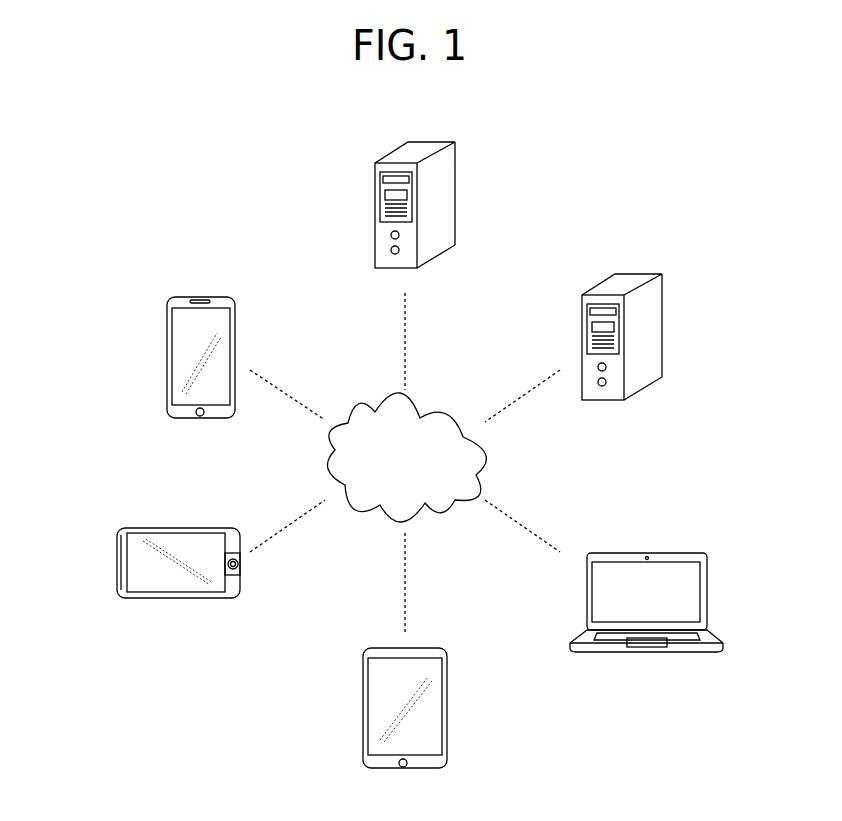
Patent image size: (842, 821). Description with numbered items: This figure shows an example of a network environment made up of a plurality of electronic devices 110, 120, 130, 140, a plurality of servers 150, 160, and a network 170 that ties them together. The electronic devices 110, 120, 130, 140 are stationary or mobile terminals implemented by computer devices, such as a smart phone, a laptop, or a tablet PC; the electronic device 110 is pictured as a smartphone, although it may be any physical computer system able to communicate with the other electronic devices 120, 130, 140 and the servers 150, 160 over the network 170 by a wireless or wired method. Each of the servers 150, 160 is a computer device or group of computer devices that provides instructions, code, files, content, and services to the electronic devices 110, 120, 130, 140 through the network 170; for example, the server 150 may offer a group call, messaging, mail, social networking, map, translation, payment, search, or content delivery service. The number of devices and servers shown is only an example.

The electronic device 110 is at (167, 357).
The electronic device 120 is at (117, 562).
The electronic device 130 is at (448, 708).
The electronic device 140 is at (707, 593).
The server 150 is at (665, 325).
The server 160 is at (457, 192).
The network 170 is at (430, 412).